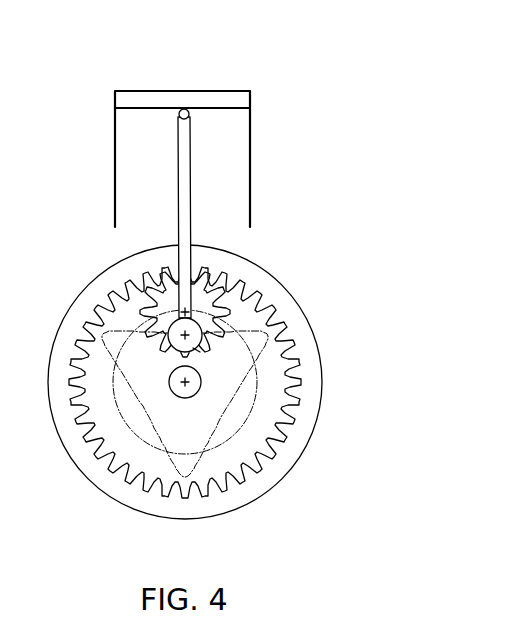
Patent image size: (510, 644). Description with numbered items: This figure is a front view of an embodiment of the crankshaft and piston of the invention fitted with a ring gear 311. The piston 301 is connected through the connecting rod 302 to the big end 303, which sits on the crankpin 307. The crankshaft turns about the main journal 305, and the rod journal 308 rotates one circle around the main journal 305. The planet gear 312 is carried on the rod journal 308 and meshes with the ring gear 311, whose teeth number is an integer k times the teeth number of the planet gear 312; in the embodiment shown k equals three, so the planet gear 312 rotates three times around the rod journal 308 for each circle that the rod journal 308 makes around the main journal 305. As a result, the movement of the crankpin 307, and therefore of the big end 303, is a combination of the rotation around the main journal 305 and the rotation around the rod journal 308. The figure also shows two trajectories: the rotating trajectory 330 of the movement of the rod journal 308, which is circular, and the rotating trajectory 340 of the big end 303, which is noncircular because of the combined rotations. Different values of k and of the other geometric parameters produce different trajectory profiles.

The piston 301 is at (235, 127).
The connecting rod 302 is at (285, 209).
The big end 303 is at (307, 408).
The main journal 305 is at (292, 435).
The crankpin 307 is at (293, 364).
The rod journal 308 is at (290, 255).
The ring gear 311 is at (170, 390).
The planet gear 312 is at (116, 303).
The rotating trajectory of the rod journal 330 is at (246, 430).
The rotating trajectory of the big end 340 is at (241, 379).